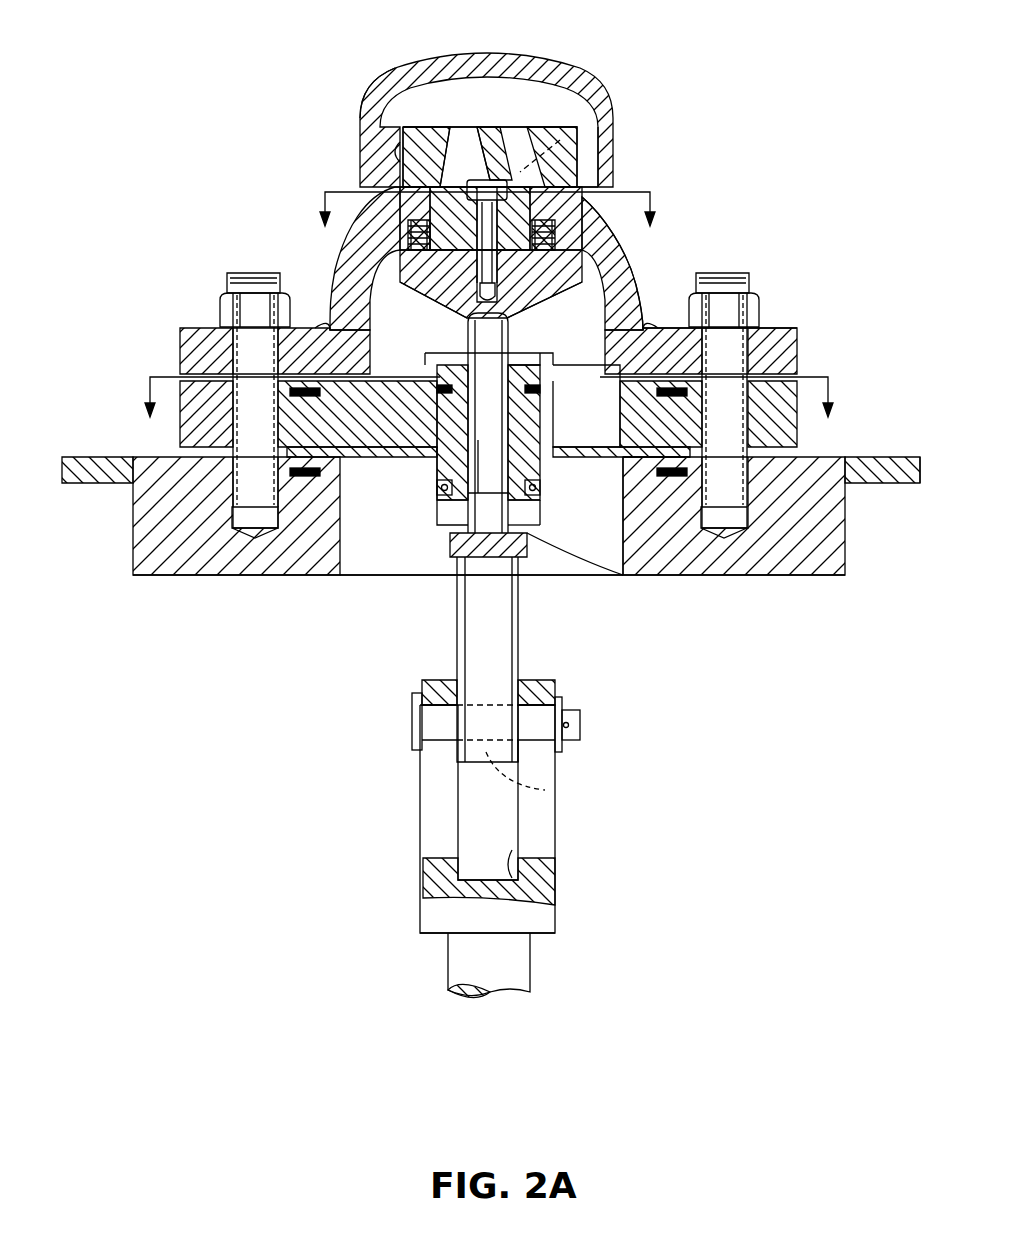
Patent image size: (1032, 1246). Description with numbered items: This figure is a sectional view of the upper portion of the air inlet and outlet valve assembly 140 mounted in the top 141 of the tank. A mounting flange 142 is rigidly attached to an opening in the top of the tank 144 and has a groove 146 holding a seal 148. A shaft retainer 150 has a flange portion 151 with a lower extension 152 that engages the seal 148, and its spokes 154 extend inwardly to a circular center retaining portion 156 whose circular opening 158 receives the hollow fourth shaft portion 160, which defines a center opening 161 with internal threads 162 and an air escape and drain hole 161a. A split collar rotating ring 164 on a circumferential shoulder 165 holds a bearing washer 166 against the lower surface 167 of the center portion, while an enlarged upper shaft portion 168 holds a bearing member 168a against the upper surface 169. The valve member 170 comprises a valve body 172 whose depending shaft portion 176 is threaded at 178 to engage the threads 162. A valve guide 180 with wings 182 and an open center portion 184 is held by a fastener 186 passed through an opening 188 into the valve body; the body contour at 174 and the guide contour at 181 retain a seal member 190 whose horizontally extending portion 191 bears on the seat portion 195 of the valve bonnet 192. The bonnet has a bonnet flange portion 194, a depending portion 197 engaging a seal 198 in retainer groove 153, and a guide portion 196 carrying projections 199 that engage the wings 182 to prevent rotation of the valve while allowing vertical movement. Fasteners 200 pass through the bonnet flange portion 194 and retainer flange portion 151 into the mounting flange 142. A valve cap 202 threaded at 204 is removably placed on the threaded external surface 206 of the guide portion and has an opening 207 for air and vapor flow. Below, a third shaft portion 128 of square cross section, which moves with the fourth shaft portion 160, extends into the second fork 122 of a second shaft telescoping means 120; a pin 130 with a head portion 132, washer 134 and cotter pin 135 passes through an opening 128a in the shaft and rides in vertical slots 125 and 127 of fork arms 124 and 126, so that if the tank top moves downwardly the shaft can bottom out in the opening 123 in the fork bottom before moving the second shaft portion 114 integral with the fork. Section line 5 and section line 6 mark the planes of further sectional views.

The valve cap 202 is at (422, 62).
The cap threads 204 is at (372, 92).
The threaded external surface 206 is at (362, 165).
The valve guide 180 is at (432, 127).
The wings 182 is at (505, 130).
The open center portion 184 is at (460, 160).
The fastener 186 is at (490, 180).
The guide portion 196 is at (575, 128).
The projections 199 is at (560, 140).
The opening 207 is at (585, 150).
The opening 188 is at (577, 180).
The valve body 172 is at (400, 262).
The valve guide contour 181 is at (420, 230).
The horizontally extending portion 191 is at (424, 238).
The seat portion 195 is at (556, 222).
The valve member 170 is at (420, 297).
The valve body contour 174 is at (622, 268).
The seal member 190 is at (602, 243).
The housing lower wall 192 is at (634, 280).
The section line 6- 6 is at (487, 203).
The fasteners 200 is at (225, 310).
The bonnet flange portion 194 is at (762, 340).
The bonnet flange depending portion 197 is at (663, 345).
The shaft retainer 150 is at (775, 390).
The section line 5- 5 is at (485, 395).
The threads 178 is at (425, 360).
The circular opening 158 is at (540, 370).
The enlarged upper shaft portion 168 is at (458, 380).
The bearing member 168a is at (440, 386).
The depending shaft portion 176 is at (490, 423).
The lower surface 167 is at (485, 460).
The retainer groove 153 is at (658, 392).
The seal 148 is at (657, 468).
The spokes 154 is at (372, 482).
The groove 146 is at (658, 474).
The upper surface 169 is at (405, 442).
The center retaining portion 156 is at (540, 385).
The seal 198 is at (545, 490).
The internal threads 162 is at (544, 503).
The split collar rotating ring 164 is at (542, 527).
The bearing washer 166 is at (440, 510).
The circumferential shoulder 165 is at (446, 540).
The opening in the top of the tank 144 is at (832, 470).
The top of the tank 141 is at (886, 478).
The mounting flange 142 is at (802, 470).
The flange portion 151 is at (702, 462).
The lower extension 152 is at (692, 482).
The fourth shaft portion 160 is at (466, 552).
The center opening 161 is at (470, 522).
The air escape and drain hole 161a is at (596, 580).
The air inlet and outlet valve assembly 140 is at (700, 603).
The third shaft portion 128 is at (495, 625).
The arm 126 is at (442, 690).
The arm 124 is at (545, 688).
The pin 130 is at (440, 720).
The vertical slot 127 is at (440, 800).
The washer 134 is at (560, 698).
The head portion 132 is at (412, 716).
The cotter pin 135 is at (580, 722).
The vertical slot 125 is at (540, 765).
The opening 128a is at (548, 790).
The opening 123 is at (522, 845).
The second fork 122 is at (545, 878).
The second shaft telescoping means 120 is at (625, 835).
The second shaft portion 114 is at (505, 968).